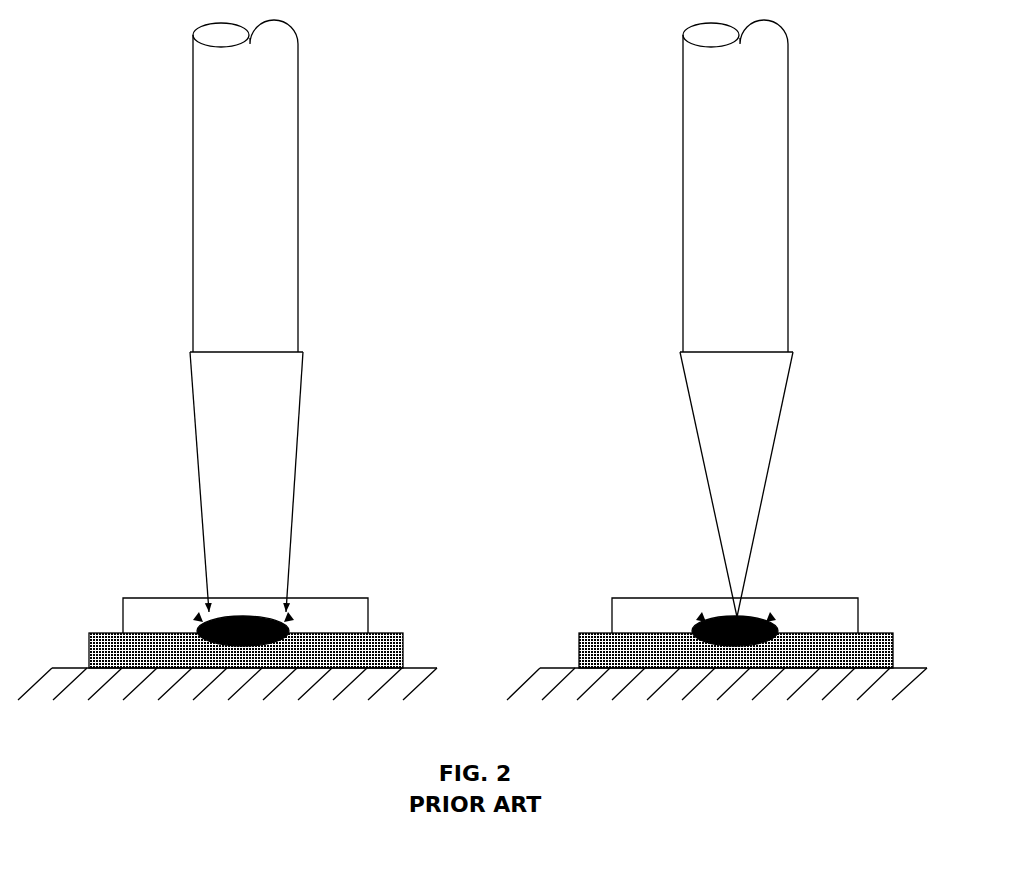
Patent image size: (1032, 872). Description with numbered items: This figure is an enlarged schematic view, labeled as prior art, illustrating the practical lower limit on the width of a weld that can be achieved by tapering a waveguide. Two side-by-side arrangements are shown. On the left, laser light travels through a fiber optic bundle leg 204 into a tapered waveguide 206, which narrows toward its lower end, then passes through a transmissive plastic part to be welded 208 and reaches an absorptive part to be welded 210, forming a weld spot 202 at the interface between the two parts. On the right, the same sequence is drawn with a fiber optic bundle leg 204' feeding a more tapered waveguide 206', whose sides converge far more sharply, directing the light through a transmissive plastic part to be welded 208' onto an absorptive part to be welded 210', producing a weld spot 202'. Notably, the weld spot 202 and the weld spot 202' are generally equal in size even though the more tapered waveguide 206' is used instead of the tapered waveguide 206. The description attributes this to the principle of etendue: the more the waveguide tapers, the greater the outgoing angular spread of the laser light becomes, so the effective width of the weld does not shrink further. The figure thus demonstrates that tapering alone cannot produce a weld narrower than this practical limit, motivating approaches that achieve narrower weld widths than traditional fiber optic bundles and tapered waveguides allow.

The weld spot 202 is at (209, 579).
The fiber optic bundle leg 204 is at (284, 186).
The tapered waveguide 206 is at (282, 482).
The transmissive plastic part to be welded 208 is at (259, 572).
The absorptive part to be welded 210 is at (231, 630).
The weld spot 202' is at (696, 576).
The fiber optic bundle leg 204' is at (781, 186).
The more tapered waveguide 206' is at (774, 487).
The transmissive plastic part to be welded 208' is at (755, 575).
The absorptive part to be welded 210' is at (720, 632).